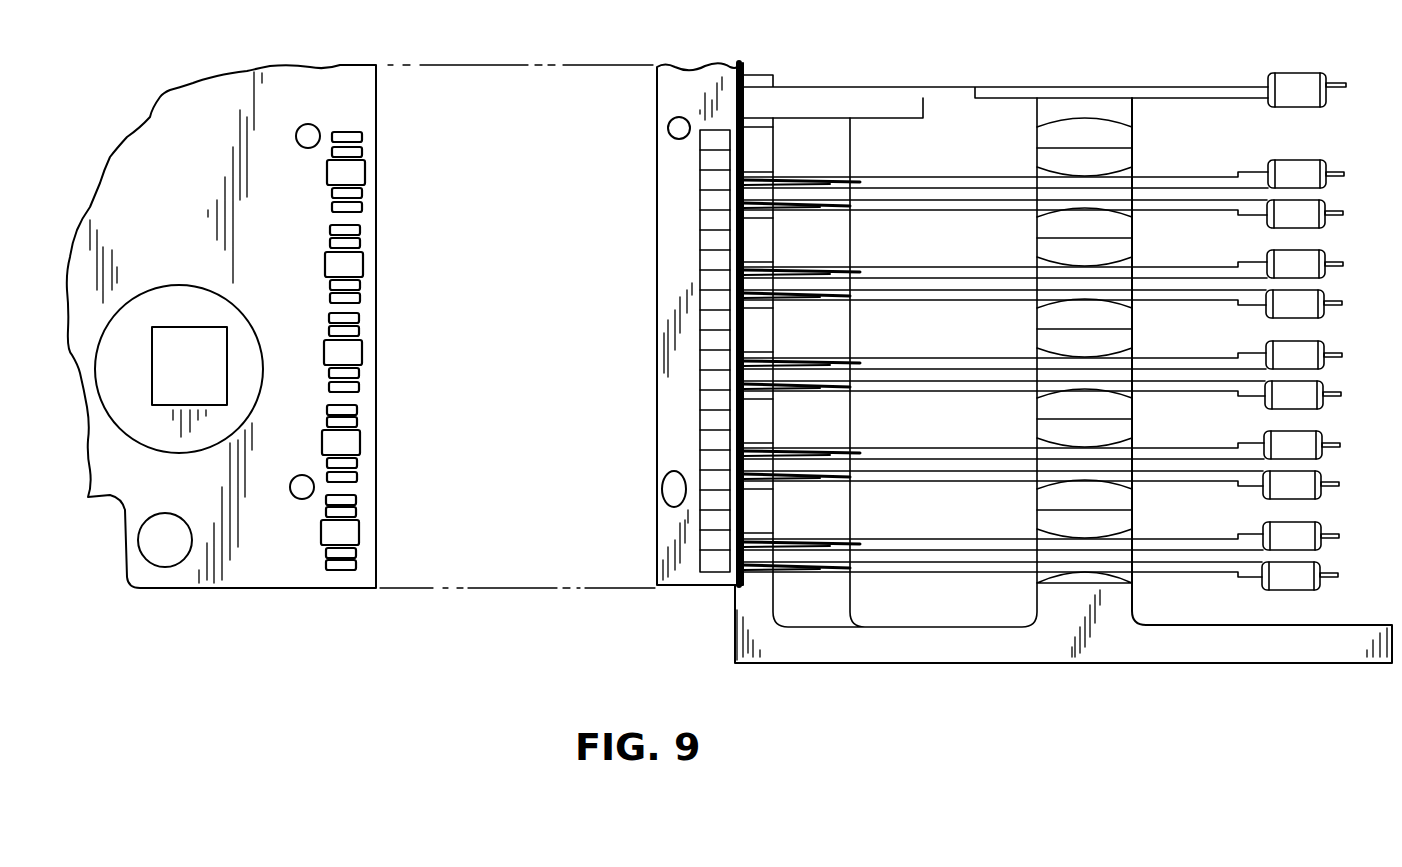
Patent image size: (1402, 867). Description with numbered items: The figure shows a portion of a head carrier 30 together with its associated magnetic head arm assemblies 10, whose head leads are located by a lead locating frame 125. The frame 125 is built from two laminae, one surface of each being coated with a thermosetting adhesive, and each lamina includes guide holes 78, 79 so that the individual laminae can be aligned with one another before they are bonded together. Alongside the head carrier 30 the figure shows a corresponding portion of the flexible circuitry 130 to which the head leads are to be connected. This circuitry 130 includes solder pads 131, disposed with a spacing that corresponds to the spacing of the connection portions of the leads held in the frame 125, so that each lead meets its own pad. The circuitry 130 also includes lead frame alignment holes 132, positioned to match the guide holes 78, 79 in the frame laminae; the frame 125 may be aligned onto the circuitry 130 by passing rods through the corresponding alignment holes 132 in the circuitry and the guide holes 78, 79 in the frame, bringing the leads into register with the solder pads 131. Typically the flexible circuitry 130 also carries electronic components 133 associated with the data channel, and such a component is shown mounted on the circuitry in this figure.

The magnetic head arm assemblies 10 is at (1198, 575).
The head carrier 30 is at (1006, 667).
The guide hole 78 is at (668, 126).
The guide hole 79 is at (662, 491).
The lead locating frame 125 is at (720, 67).
The flexible circuitry 130 is at (244, 590).
The solder pads 131 is at (363, 257).
The lead frame alignment holes 132 is at (312, 125).
The electronic components 133 is at (208, 378).